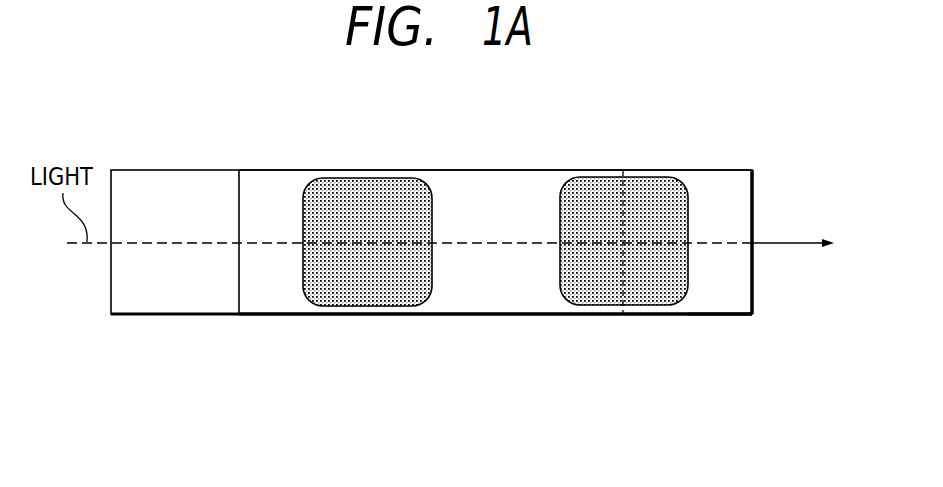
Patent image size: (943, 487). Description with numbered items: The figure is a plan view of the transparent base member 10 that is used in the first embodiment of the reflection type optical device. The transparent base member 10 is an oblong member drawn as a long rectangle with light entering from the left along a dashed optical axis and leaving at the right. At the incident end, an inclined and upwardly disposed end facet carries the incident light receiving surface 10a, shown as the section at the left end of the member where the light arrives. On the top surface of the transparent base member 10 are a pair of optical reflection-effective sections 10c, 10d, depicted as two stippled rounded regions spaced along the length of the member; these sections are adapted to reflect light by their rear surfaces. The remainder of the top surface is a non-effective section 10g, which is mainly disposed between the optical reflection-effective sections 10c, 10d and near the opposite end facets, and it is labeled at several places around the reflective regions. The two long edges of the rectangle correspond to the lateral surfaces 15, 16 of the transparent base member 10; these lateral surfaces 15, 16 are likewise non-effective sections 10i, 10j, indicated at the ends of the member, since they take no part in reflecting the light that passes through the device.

The transparent base member 10 is at (262, 150).
The incident light receiving surface 10a is at (168, 180).
The optical reflection-effective section 10c is at (378, 187).
The optical reflection-effective section 10d is at (640, 190).
The non-effective section 10g is at (495, 185).
The non-effective section 10i is at (727, 168).
The non-effective section 10j is at (725, 315).
The lateral surface 15 is at (436, 170).
The lateral surface 16 is at (377, 317).